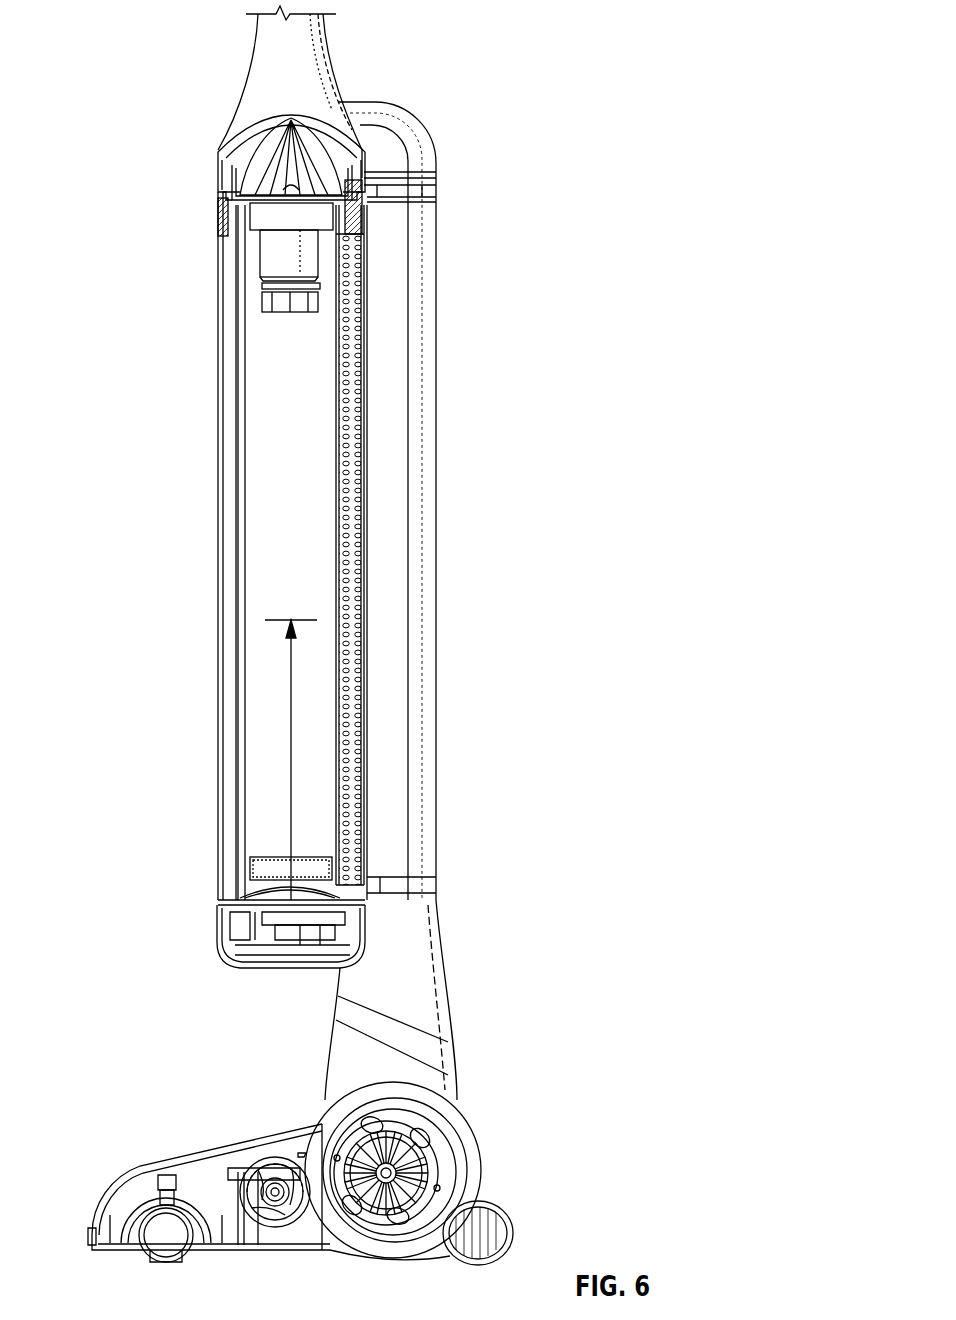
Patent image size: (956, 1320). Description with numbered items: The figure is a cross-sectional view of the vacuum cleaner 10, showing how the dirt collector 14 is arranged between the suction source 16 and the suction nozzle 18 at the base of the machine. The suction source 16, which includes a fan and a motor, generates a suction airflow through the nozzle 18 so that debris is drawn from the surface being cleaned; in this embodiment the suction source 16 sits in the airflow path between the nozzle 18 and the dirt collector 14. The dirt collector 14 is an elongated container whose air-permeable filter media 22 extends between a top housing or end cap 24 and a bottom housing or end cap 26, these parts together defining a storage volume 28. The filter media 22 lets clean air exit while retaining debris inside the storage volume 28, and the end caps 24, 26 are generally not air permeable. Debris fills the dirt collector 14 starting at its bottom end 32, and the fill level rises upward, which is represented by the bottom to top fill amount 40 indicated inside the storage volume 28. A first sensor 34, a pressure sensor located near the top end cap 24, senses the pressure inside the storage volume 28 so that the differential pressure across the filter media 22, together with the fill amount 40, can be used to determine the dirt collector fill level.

The vacuum cleaner 10 is at (570, 92).
The dirt collector 14 is at (226, 427).
The suction source 16 is at (430, 1166).
The suction nozzle 18 is at (127, 1258).
The filter media 22 is at (252, 466).
The top housing or end cap 24 is at (232, 163).
The bottom housing or end cap 26 is at (268, 882).
The storage volume 28 is at (284, 546).
The bottom end 32 is at (313, 880).
The first sensor 34 is at (352, 205).
The bottom to top fill amount 40 is at (291, 735).